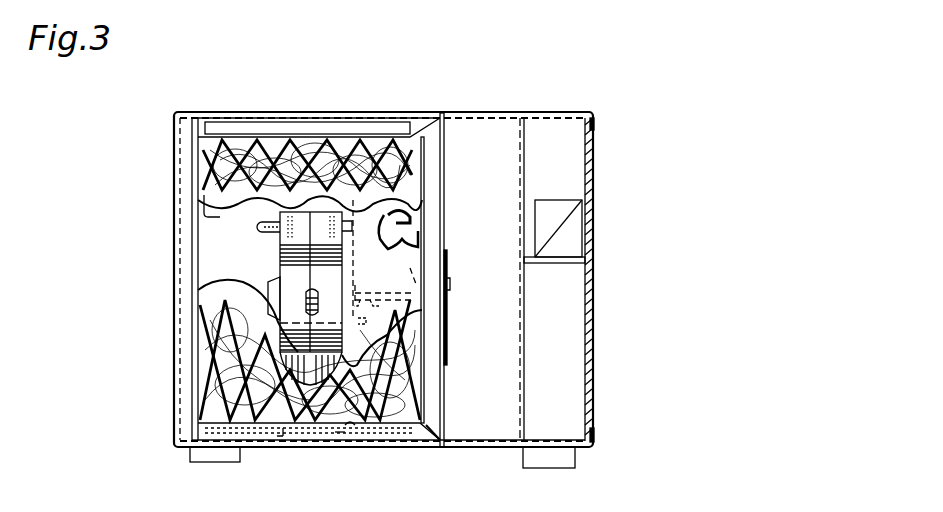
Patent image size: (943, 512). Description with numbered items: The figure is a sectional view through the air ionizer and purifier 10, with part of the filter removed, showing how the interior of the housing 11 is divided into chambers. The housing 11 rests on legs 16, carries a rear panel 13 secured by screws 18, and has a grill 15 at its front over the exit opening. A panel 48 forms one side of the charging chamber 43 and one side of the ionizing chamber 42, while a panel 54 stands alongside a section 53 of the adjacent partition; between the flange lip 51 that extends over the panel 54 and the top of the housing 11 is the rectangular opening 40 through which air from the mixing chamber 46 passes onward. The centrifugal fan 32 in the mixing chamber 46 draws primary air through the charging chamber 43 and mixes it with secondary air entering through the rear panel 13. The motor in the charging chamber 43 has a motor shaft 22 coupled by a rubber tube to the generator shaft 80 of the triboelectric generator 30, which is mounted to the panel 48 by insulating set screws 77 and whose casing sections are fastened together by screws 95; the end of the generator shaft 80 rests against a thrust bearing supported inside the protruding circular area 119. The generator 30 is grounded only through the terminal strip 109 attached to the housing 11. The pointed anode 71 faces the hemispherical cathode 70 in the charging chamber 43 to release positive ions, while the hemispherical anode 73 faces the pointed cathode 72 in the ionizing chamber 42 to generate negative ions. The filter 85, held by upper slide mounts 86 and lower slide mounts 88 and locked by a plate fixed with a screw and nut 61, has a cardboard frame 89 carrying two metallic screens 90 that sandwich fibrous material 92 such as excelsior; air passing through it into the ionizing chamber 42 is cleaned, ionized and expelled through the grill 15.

The air ionizer and purifier 10 is at (501, 106).
The housing 11 is at (252, 114).
The rear panel 13 is at (596, 362).
The grill 15 is at (175, 190).
The legs 16 is at (200, 458).
The screws 18 is at (595, 126).
The motor shaft 22 is at (384, 260).
The triboelectric generator 30 is at (280, 260).
The centrifugal fan 32 is at (570, 212).
The opening 40 is at (512, 170).
The ionizing chamber 42 is at (208, 260).
The charging chamber 43 is at (425, 227).
The mixing chamber 46 is at (572, 160).
The panel 48 is at (338, 445).
The flange lip 51 is at (566, 262).
The section 53 is at (476, 392).
The panel 54 is at (549, 392).
The screw and nut 61 is at (452, 292).
The cathode 70 is at (386, 240).
The anode 71 is at (375, 233).
The cathode 72 is at (220, 218).
The anode 73 is at (262, 236).
The set screws 77 is at (366, 321).
The generator shaft 80 is at (364, 298).
The filter 85 is at (370, 435).
The upper slide mounts 86 is at (296, 124).
The lower slide mounts 88 is at (360, 450).
The frame 89 is at (434, 425).
The metallic screens 90 is at (436, 378).
The fibrous material 92 is at (212, 394).
The screws 95 is at (306, 298).
The terminal strip 109 is at (280, 445).
The protruding circular area 119 is at (270, 284).